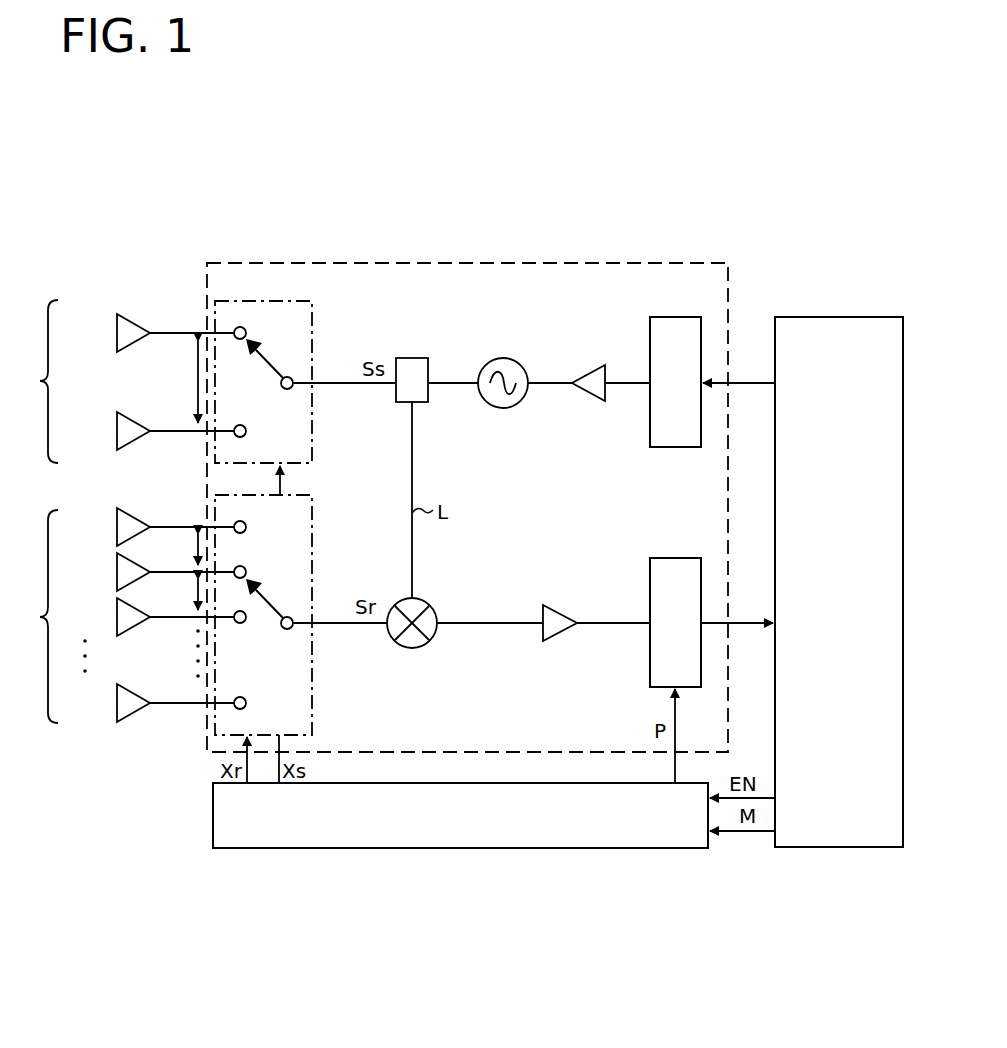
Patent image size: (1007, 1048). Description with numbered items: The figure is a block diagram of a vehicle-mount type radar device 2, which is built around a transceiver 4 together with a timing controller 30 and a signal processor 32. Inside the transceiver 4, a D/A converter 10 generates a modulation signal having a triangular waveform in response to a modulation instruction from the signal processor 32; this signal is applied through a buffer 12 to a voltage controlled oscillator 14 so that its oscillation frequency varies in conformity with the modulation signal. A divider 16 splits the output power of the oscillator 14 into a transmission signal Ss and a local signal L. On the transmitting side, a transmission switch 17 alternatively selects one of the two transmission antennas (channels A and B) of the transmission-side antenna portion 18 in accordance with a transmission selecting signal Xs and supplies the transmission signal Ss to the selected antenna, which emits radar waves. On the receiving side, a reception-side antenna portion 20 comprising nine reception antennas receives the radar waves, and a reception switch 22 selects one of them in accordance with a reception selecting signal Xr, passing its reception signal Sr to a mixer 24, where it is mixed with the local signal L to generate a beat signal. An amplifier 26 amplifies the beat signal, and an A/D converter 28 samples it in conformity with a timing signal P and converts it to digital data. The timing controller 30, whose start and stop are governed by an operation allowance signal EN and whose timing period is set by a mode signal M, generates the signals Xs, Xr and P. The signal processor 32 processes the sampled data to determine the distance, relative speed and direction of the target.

The radar device 2 is at (238, 218).
The transceiver 4 is at (627, 262).
The D/A converter 10 is at (668, 317).
The buffer 12 is at (596, 365).
The voltage controlled oscillator 14 is at (504, 358).
The divider 16 is at (404, 402).
The transmission switch 17 is at (313, 318).
The transmission-side antenna portion 18 is at (120, 381).
The reception-side antenna portion 20 is at (120, 634).
The reception switch 22 is at (313, 512).
The mixer 24 is at (412, 648).
The amplifier 26 is at (557, 641).
The A/D converter 28 is at (650, 573).
The timing controller 30 is at (243, 848).
The signal processor 32 is at (793, 317).